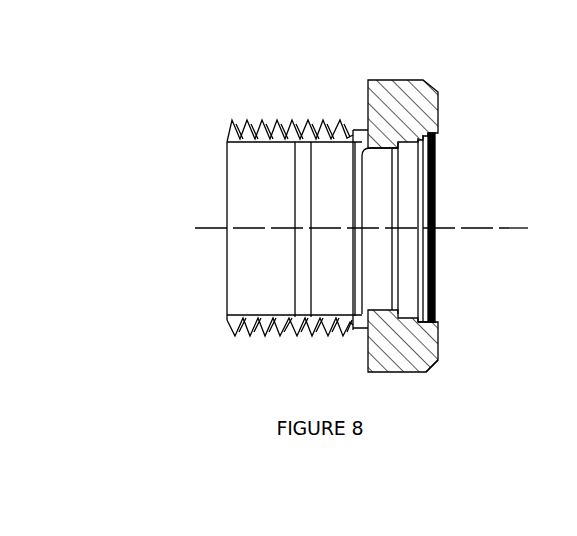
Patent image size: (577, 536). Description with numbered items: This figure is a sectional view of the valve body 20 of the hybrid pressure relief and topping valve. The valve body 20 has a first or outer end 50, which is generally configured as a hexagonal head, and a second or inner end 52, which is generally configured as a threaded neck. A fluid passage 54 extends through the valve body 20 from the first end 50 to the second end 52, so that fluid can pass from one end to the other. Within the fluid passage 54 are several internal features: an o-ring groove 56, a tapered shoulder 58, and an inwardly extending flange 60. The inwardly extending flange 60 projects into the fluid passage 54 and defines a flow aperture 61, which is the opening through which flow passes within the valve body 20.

The valve body 20 is at (206, 373).
The first or outer end 50 is at (438, 114).
The second or inner end 52 is at (226, 141).
The fluid passage 54 is at (255, 205).
The o-ring groove 56 is at (418, 373).
The tapered shoulder 58 is at (420, 295).
The inwardly extending flange 60 is at (358, 150).
The flow aperture 61 is at (358, 262).